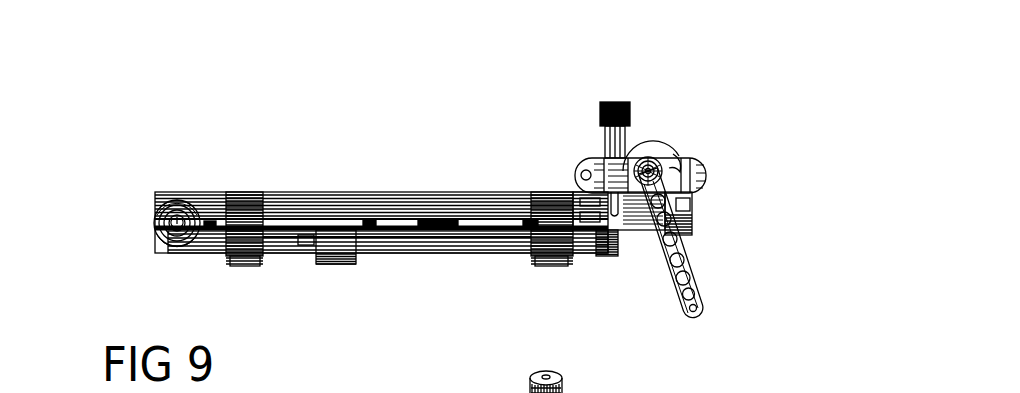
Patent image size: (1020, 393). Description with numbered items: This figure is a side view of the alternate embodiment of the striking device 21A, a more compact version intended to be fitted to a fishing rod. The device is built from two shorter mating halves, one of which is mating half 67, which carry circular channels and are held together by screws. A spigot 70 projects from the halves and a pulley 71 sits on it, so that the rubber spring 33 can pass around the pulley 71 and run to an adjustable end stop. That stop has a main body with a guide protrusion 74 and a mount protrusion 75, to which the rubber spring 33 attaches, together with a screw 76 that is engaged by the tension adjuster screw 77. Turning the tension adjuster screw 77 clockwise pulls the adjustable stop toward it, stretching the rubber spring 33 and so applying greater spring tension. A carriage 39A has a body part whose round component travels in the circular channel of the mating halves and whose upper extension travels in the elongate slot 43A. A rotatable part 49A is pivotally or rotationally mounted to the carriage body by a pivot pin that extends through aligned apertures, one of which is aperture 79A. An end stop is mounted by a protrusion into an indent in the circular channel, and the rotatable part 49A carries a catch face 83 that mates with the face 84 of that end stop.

The striking device 21A is at (498, 120).
The rubber spring 33 is at (372, 186).
The carriage 39A is at (645, 122).
The elongate slot 43A is at (521, 186).
The rotatable part 49A is at (701, 280).
The mating half 67 is at (469, 247).
The spigot 70 is at (177, 211).
The pulley 71 is at (148, 215).
The guide protrusion 74 is at (325, 252).
The mount protrusion 75 is at (302, 234).
The screw 76 is at (421, 228).
The tension adjuster screw 77 is at (601, 249).
The aperture 79A is at (590, 382).
The catch face 83 is at (695, 178).
The face 84 is at (689, 185).